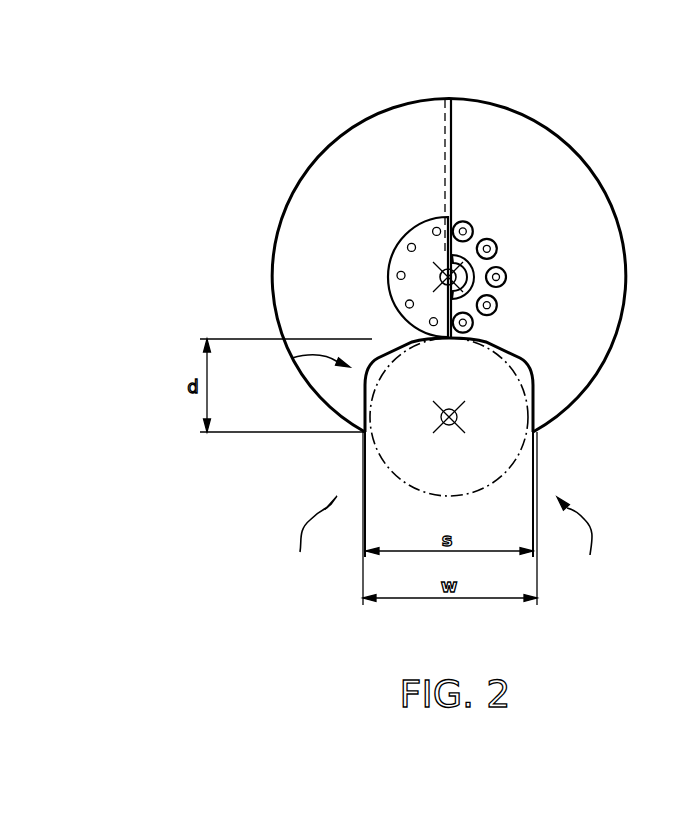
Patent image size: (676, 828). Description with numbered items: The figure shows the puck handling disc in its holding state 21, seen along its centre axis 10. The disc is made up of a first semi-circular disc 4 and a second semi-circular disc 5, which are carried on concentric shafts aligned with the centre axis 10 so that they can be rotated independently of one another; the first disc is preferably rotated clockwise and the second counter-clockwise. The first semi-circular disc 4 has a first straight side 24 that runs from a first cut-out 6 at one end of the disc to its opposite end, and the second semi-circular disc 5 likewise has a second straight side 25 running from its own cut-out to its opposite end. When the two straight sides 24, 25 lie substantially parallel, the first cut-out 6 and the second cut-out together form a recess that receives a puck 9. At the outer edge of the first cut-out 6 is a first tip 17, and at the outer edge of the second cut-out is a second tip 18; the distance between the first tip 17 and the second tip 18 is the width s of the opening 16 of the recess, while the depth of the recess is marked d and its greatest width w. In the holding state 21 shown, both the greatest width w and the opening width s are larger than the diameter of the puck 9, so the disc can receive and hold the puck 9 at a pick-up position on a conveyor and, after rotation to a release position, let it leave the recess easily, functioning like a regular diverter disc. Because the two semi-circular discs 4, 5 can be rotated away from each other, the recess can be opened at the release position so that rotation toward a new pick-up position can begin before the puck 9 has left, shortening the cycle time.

The first semi-circular disc 4 is at (368, 156).
The second semi-circular disc 5 is at (530, 154).
The first cut-out 6 is at (296, 357).
The puck 9 is at (488, 408).
The centre axis 10 is at (445, 277).
The opening 16 is at (300, 552).
The first tip 17 is at (364, 433).
The second tip 18 is at (535, 433).
The holding state 21 is at (590, 555).
The first straight side 24 is at (455, 130).
The second straight side 25 is at (443, 130).